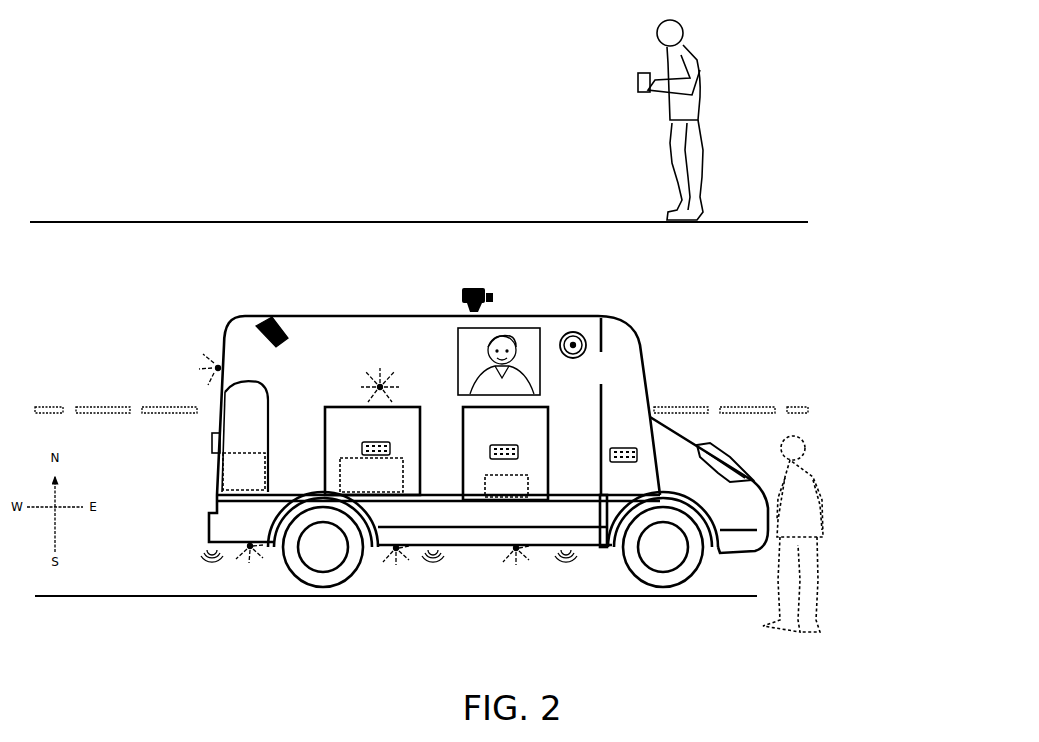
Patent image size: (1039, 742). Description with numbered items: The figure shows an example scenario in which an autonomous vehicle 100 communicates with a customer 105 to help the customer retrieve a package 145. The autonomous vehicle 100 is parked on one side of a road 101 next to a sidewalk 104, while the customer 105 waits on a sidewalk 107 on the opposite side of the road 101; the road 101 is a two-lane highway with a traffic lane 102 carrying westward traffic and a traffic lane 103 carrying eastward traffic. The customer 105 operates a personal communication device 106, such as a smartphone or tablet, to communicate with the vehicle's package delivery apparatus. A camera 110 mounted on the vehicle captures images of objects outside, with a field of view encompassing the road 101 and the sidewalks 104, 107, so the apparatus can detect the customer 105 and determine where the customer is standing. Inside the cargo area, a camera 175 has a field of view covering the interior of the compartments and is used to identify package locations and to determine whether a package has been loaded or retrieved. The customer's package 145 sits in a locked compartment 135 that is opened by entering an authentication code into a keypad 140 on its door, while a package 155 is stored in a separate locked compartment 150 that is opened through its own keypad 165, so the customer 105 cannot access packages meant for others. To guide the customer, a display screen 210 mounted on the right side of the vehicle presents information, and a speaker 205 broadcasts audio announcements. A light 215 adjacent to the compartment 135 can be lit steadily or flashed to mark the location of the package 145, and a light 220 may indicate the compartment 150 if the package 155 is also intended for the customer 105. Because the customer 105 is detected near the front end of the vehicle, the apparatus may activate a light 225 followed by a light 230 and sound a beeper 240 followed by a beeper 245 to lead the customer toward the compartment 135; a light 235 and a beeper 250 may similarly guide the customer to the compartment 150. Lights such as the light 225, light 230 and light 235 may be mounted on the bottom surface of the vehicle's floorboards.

The autonomous vehicle 100 is at (698, 307).
The road 101 is at (740, 222).
The traffic lane 102 is at (886, 318).
The traffic lane 103 is at (890, 497).
The sidewalk 104 is at (876, 624).
The customer 105 is at (722, 63).
The personal communication device 106 is at (641, 91).
The sidewalk 107 is at (895, 200).
The camera 110 is at (498, 282).
The compartment 135 is at (353, 406).
The keypad 140 is at (375, 443).
The package 145 is at (362, 488).
The locked compartment 150 is at (270, 421).
The package 155 is at (234, 482).
The keypad 165 is at (212, 443).
The camera 175 is at (298, 339).
The speaker 205 is at (584, 356).
The display screen 210 is at (541, 356).
The light 215 is at (387, 368).
The light 220 is at (214, 354).
The light 225 is at (521, 557).
The light 230 is at (401, 557).
The light 235 is at (256, 553).
The beeper 240 is at (587, 565).
The beeper 245 is at (447, 562).
The beeper 250 is at (197, 543).